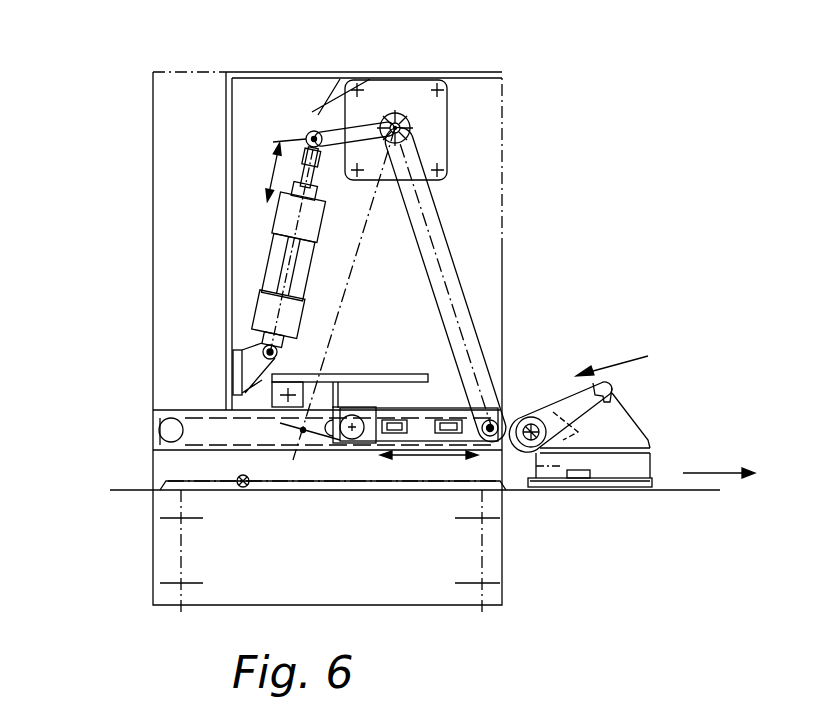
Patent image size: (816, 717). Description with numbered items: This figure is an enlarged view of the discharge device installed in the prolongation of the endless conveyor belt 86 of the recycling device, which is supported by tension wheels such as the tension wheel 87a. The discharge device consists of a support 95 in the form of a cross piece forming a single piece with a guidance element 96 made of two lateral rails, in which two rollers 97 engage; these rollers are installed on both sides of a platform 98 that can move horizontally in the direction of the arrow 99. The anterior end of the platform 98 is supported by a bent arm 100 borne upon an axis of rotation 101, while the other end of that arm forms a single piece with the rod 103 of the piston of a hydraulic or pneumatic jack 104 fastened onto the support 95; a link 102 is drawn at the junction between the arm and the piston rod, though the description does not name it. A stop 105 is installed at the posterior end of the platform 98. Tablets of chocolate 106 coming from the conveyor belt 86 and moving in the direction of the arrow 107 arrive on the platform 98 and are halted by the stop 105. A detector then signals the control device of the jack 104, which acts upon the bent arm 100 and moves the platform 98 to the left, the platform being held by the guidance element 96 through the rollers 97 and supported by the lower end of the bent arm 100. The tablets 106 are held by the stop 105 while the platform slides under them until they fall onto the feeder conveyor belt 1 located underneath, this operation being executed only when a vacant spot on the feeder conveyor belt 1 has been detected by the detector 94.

The feeder conveyor belt 1 is at (700, 493).
The endless conveyor belt 86 is at (640, 420).
The tension wheel 87a is at (565, 484).
The detector 94 is at (238, 484).
The support 95 is at (228, 200).
The guidance element 96 is at (222, 433).
The rollers 97 is at (347, 442).
The platform 98 is at (427, 434).
The arrow 99 is at (443, 460).
The bent arm 100 is at (455, 300).
The axis of rotation 101 is at (403, 124).
The lever link 102 is at (342, 130).
The piston rod 103 is at (298, 159).
The hydraulic or pneumatic jack 104 is at (265, 268).
The stop 105 is at (340, 396).
The tablets of chocolate 106 is at (580, 400).
The arrow 107 is at (628, 370).